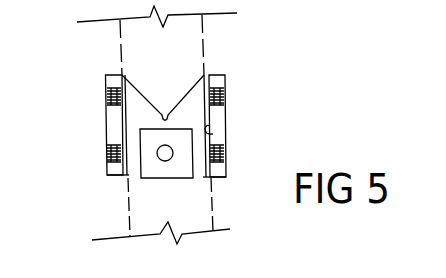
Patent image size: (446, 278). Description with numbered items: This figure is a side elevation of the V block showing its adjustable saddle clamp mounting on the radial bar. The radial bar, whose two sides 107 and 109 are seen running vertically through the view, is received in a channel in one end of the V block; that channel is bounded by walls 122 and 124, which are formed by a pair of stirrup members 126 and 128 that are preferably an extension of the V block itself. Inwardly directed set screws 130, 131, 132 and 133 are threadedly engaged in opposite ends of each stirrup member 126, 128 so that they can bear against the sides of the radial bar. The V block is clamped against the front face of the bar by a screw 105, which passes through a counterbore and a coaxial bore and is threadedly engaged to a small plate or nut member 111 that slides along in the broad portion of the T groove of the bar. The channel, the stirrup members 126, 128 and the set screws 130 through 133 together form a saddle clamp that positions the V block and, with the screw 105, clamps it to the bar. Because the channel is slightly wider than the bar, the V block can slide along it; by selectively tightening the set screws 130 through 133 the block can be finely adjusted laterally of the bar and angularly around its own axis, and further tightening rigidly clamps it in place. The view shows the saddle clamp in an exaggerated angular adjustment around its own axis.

The screw 105 is at (192, 178).
The side of the radial bar 107 is at (203, 33).
The side of the radial bar 109 is at (123, 68).
The nut member 111 is at (160, 167).
The wall 122 is at (122, 125).
The wall 124 is at (213, 134).
The stirrup member 126 is at (112, 115).
The stirrup member 128 is at (215, 122).
The set screw 130 is at (112, 95).
The set screw 131 is at (105, 158).
The set screw 132 is at (223, 157).
The set screw 133 is at (223, 95).